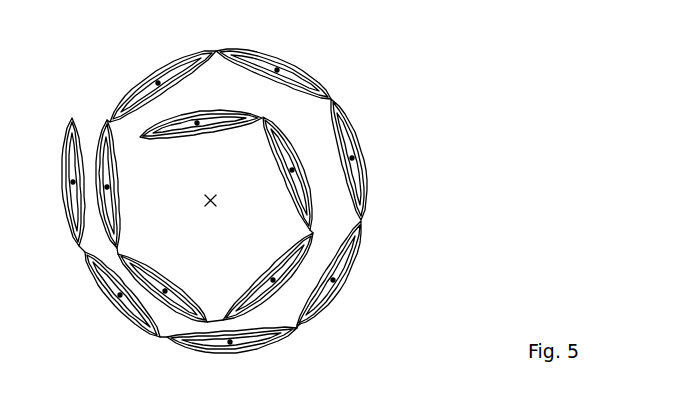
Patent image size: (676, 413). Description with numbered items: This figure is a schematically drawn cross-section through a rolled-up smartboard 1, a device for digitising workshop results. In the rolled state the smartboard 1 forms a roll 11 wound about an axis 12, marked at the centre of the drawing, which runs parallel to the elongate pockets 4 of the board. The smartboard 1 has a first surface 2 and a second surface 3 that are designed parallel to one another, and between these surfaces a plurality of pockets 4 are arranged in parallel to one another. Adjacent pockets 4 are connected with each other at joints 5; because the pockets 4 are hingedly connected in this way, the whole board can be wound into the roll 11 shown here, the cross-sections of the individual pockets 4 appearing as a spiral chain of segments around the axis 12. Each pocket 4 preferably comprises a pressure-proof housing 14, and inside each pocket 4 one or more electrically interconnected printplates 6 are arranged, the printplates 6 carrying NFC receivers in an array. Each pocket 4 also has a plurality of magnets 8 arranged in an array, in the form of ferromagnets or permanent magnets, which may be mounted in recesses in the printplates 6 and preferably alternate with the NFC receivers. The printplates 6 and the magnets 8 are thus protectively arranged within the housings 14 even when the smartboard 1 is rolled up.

The smartboard 1 is at (445, 123).
The roll 11 is at (451, 187).
The first surface 2 is at (132, 92).
The second surface 3 is at (187, 139).
The pocket 4 is at (330, 92).
The joint 5 is at (297, 331).
The printplate 6 is at (352, 270).
The magnet 8 is at (233, 346).
The axis 12 is at (225, 206).
The pressure-proof housing 14 is at (293, 70).